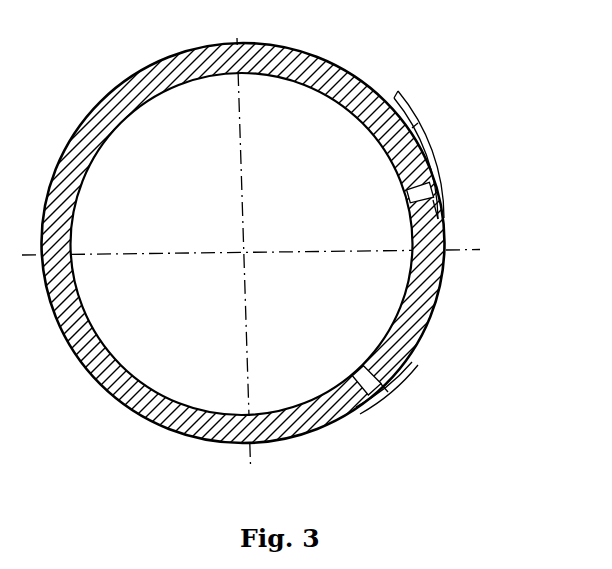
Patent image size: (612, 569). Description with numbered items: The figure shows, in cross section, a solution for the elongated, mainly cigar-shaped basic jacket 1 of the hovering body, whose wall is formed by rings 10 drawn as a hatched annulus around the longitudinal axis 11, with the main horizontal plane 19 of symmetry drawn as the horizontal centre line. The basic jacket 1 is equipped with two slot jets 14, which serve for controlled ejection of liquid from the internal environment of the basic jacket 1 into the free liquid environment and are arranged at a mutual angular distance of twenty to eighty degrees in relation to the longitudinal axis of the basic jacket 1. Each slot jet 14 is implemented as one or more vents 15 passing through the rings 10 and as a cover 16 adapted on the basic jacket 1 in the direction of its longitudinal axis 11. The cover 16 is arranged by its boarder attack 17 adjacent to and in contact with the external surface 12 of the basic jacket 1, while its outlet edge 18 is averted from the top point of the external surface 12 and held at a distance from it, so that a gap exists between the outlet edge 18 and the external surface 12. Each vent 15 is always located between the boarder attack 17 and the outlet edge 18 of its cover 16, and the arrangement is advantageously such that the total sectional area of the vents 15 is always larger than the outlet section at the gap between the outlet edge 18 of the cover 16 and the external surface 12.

The basic jacket 1 is at (354, 80).
The rings 10 is at (383, 102).
The longitudinal axis 11 is at (243, 253).
The external surface 12 is at (443, 292).
The slot jet 14 is at (440, 166).
The vents 15 is at (447, 195).
The cover 16 is at (450, 208).
The boarder attack 17 is at (410, 127).
The outlet edge 18 is at (450, 233).
The main horizontal plane of symmetry 19 is at (100, 255).